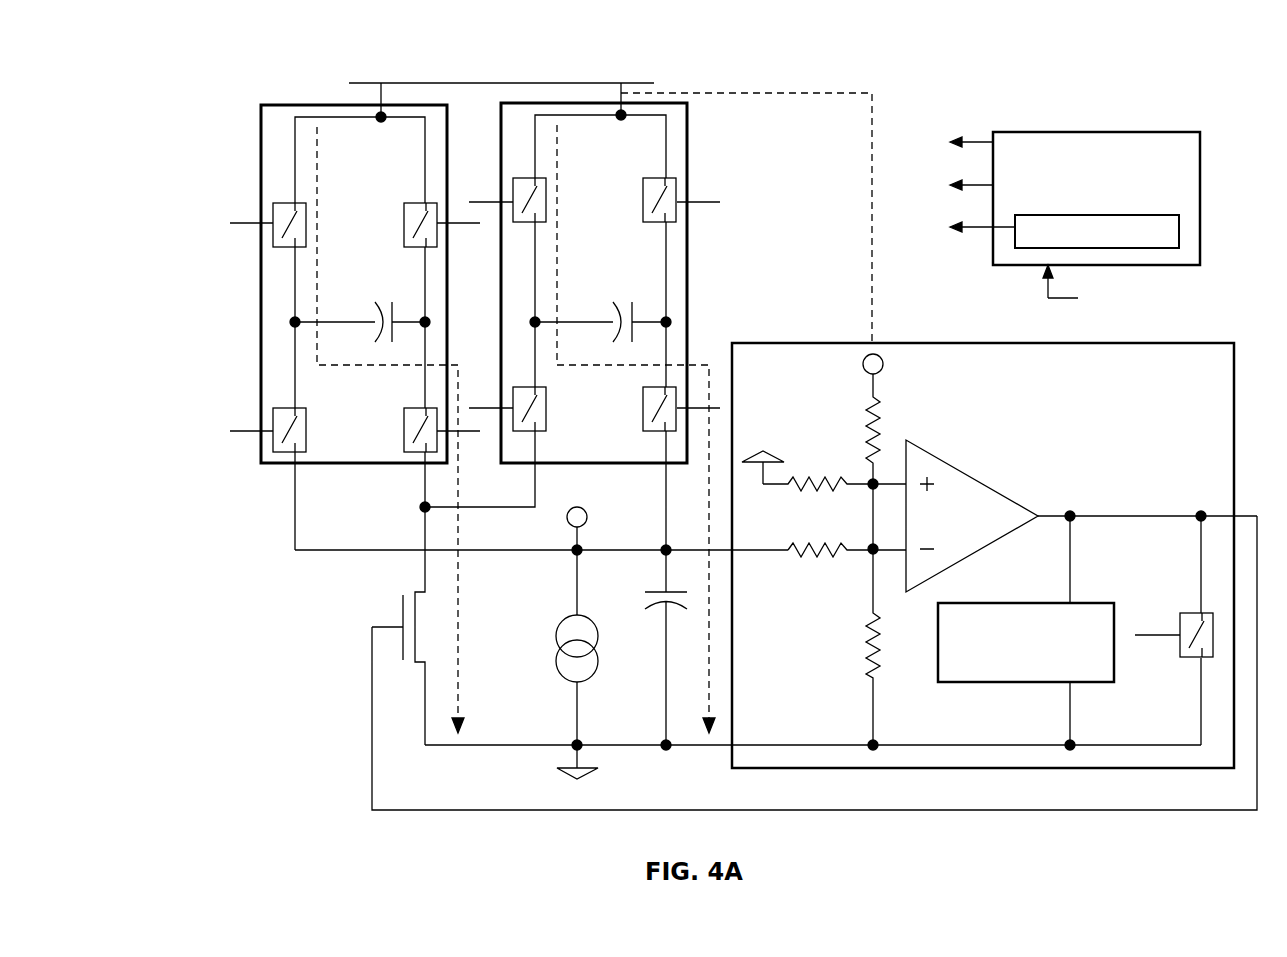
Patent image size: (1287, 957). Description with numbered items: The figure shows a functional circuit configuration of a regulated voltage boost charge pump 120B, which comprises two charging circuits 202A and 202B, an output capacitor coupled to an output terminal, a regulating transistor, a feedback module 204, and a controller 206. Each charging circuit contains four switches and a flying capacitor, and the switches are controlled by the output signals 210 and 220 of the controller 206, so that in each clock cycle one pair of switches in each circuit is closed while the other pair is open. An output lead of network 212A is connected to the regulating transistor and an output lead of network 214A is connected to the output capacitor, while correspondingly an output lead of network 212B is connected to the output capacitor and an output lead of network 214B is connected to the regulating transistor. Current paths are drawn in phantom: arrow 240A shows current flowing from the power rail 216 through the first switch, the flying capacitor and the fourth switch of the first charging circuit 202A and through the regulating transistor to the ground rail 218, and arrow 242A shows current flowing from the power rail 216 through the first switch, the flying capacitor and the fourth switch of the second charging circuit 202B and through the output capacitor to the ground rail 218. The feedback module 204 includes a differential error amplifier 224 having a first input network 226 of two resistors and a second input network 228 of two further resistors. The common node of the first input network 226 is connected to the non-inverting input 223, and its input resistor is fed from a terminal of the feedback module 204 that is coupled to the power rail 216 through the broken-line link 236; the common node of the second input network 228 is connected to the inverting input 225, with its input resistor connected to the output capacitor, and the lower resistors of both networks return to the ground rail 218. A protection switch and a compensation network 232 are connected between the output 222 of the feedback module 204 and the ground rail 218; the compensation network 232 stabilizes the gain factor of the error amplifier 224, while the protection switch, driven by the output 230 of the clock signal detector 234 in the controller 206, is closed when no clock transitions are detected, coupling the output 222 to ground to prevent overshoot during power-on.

The regulated voltage boost charge pump 120B is at (1232, 85).
The charging circuit 202A is at (285, 105).
The charging circuit 202B is at (676, 103).
The feedback module 204 is at (1210, 343).
The controller 206 is at (1076, 196).
The output signal 210 is at (252, 226).
The network 212A is at (252, 282).
The network 212B is at (567, 283).
The network 214A is at (410, 271).
The network 214B is at (702, 292).
The power rail 216 is at (488, 83).
The ground rail 218 is at (503, 745).
The output signal 220 is at (458, 224).
The output 222 is at (622, 810).
The non-inverting input 223 is at (883, 477).
The differential error amplifier 224 is at (980, 482).
The inverting input 225 is at (893, 545).
The first input network 226 is at (806, 419).
The second input network 228 is at (817, 603).
The output 230 is at (1165, 637).
The compensation network 232 is at (978, 602).
The detector 234 is at (1180, 226).
The link 236 is at (769, 218).
The arrow 240A is at (458, 650).
The arrow 242A is at (710, 660).